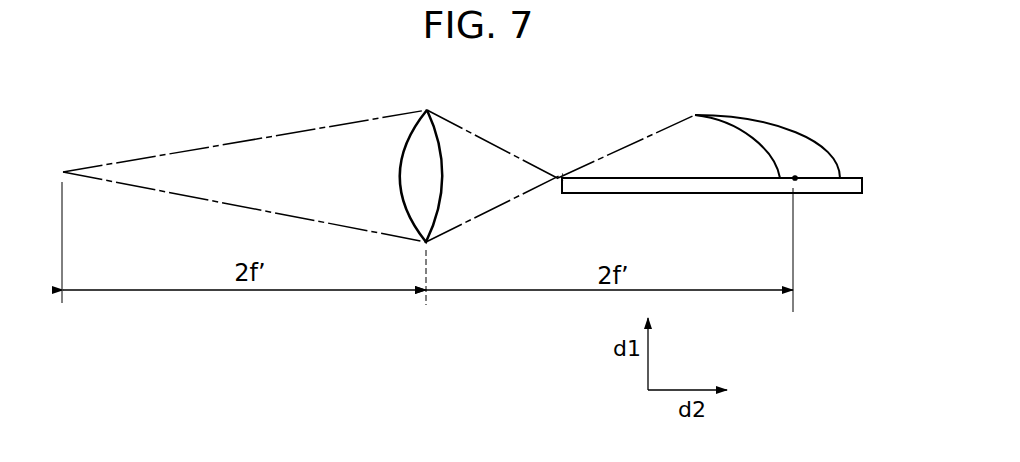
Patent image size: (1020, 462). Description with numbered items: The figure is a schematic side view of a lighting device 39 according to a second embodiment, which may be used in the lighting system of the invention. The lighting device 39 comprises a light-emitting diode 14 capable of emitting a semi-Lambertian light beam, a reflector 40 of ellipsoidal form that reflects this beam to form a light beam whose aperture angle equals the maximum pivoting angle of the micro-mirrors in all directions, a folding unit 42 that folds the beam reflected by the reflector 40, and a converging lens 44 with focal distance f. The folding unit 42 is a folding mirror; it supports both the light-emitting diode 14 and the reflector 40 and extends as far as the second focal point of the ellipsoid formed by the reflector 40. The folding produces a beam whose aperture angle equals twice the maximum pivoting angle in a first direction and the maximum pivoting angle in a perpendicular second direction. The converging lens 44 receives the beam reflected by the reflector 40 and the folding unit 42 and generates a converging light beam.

The converging lens 44 is at (415, 137).
The reflector 40 is at (793, 140).
The folding unit 42 is at (705, 188).
The light-emitting diode 14 is at (797, 182).
The lighting device 39 is at (363, 348).